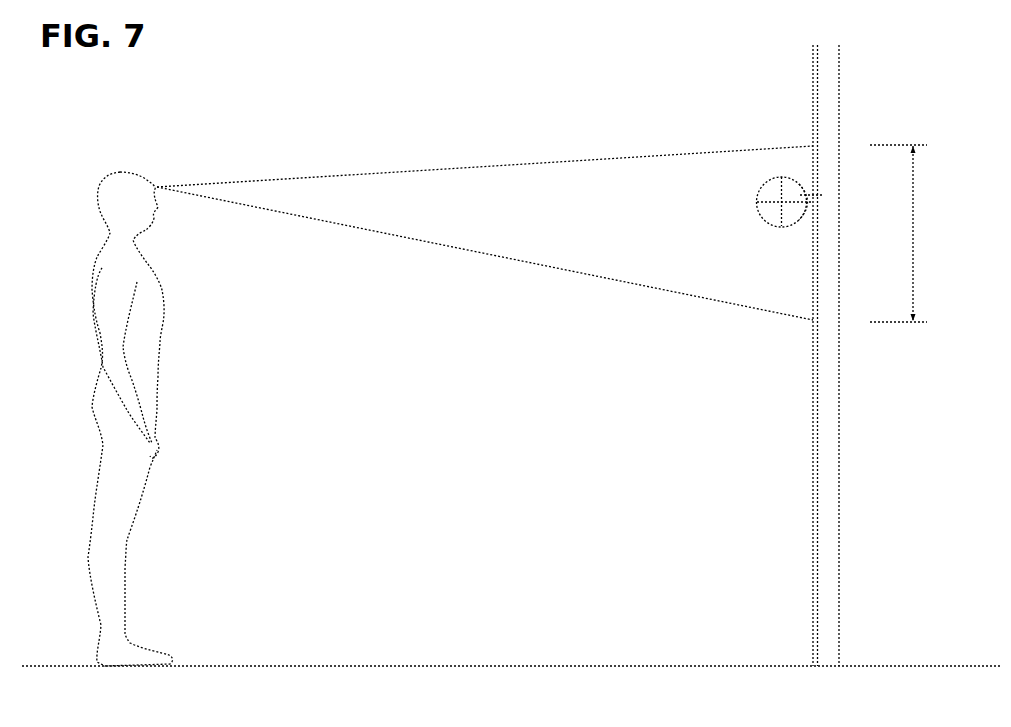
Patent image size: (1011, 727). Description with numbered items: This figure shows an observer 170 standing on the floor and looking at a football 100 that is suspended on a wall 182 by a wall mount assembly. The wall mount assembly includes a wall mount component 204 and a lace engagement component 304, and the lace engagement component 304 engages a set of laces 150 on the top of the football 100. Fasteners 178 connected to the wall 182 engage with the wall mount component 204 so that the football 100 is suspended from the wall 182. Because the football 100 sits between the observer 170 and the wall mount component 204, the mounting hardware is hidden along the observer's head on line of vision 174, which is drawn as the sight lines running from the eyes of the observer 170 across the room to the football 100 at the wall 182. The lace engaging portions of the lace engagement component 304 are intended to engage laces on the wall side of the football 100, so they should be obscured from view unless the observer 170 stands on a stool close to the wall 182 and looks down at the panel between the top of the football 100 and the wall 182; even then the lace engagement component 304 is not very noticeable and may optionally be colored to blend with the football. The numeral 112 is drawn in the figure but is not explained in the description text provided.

The observer 170 is at (108, 404).
The football 100 is at (770, 213).
The housing 112 is at (752, 202).
The set of laces 150 is at (782, 172).
The lace engagement component 304 is at (800, 175).
The fasteners 178 is at (822, 210).
The wall mount component 204 is at (806, 213).
The head on line of vision 174 is at (931, 233).
The wall 182 is at (825, 548).